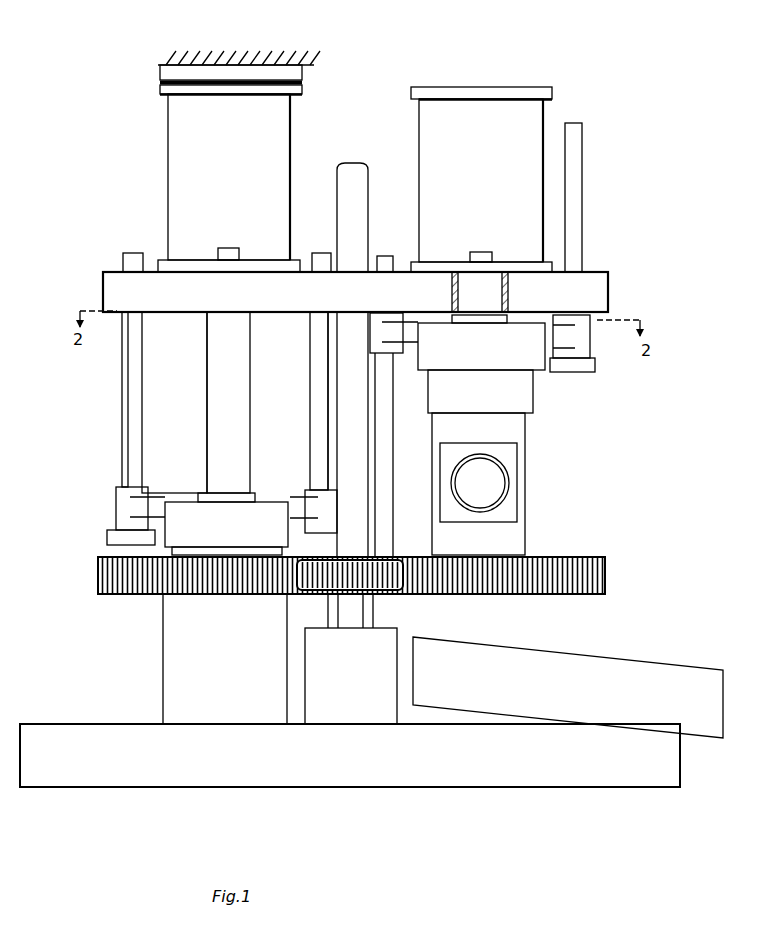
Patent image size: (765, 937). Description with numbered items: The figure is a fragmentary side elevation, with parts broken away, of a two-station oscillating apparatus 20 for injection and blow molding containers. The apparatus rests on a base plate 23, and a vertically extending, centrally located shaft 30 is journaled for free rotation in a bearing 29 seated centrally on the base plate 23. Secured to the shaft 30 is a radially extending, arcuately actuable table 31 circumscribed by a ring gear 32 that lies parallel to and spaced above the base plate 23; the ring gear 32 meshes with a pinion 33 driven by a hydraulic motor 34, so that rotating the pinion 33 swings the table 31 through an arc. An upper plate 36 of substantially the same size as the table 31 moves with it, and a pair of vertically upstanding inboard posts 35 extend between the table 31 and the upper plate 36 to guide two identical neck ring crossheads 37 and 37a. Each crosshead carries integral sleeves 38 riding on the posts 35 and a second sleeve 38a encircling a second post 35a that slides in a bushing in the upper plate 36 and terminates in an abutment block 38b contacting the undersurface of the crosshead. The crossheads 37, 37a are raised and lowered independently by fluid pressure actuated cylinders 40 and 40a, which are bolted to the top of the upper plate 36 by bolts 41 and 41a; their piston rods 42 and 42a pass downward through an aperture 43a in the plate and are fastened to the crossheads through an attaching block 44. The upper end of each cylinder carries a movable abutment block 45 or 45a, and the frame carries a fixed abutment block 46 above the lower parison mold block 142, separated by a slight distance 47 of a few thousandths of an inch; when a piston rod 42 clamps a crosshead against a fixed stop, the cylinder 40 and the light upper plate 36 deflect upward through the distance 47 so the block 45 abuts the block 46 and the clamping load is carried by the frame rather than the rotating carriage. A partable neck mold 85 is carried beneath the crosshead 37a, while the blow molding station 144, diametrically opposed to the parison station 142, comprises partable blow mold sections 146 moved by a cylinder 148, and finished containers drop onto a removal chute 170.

The two-station oscillating apparatus 20 is at (388, 48).
The base plate 23 is at (376, 787).
The bearing 29 is at (328, 612).
The shaft 30 is at (362, 207).
The table 31 is at (415, 557).
The ring gear 32 is at (605, 580).
The pinion 33 is at (398, 591).
The hydraulic motor 34 is at (351, 676).
The inboard post 35 is at (310, 385).
The second post 35a is at (582, 160).
The upper plate 36 is at (608, 288).
The neck ring crosshead 37 is at (226, 528).
The neck ring crosshead 37a is at (490, 374).
The sleeve 38 is at (306, 491).
The second sleeve 38a is at (148, 491).
The abutment block 38b is at (107, 533).
The fluid pressure actuated cylinder 40 is at (288, 158).
The fluid pressure actuated cylinder 40a is at (464, 185).
The bolt 41 is at (236, 252).
The bolt 41a is at (490, 255).
The piston rod 42 is at (244, 412).
The piston rod 42a is at (496, 293).
The aperture 43a is at (455, 291).
The attaching block 44 is at (227, 493).
The movable abutment block 45 is at (162, 95).
The movable abutment block 45a is at (552, 93).
The fixed abutment block 46 is at (302, 75).
The slight distance 47 is at (160, 83).
The partable neck mold 85 is at (502, 405).
The lower parison mold block 142 is at (225, 659).
The blow molding station 144 is at (547, 473).
The blow mold section 146 is at (478, 494).
The cylinder 148 is at (480, 483).
The removal chute 170 is at (568, 687).